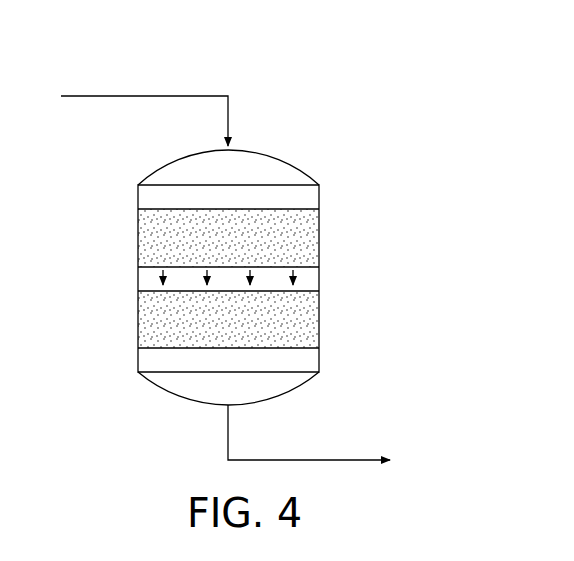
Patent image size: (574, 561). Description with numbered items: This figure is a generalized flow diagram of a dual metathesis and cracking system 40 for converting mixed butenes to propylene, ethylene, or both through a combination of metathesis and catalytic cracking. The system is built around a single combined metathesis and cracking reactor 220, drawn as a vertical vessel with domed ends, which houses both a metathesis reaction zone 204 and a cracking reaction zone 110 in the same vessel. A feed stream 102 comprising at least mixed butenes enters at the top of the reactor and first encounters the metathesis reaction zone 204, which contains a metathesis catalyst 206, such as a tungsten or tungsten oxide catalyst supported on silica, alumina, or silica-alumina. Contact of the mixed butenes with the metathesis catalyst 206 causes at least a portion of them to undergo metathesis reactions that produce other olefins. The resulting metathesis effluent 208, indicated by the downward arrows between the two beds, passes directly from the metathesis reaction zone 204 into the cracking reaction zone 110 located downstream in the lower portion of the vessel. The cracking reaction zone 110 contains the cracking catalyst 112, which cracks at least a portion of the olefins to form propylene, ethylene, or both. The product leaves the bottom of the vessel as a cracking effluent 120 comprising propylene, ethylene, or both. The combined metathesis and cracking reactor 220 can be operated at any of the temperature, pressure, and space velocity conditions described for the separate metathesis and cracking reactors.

The dual metathesis and cracking system 40 is at (402, 104).
The feed stream 102 is at (145, 96).
The cracking effluent 120 is at (355, 460).
The combined metathesis and cracking reactor 220 is at (136, 198).
The metathesis reaction zone 204 is at (306, 245).
The metathesis catalyst 206 is at (144, 248).
The metathesis effluent 208 is at (300, 276).
The cracking catalyst 112 is at (145, 315).
The cracking reaction zone 110 is at (308, 326).